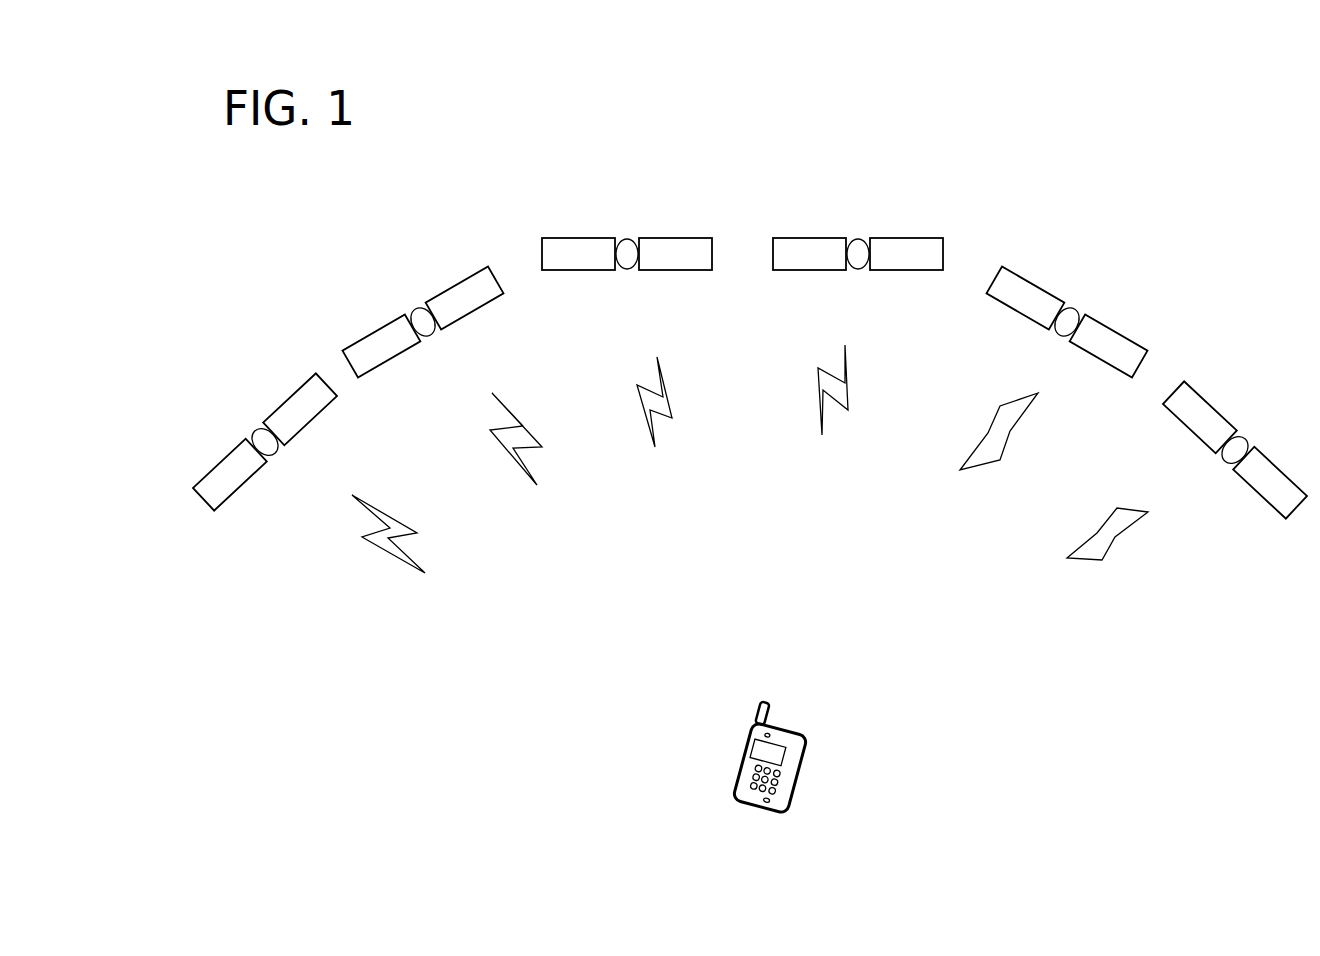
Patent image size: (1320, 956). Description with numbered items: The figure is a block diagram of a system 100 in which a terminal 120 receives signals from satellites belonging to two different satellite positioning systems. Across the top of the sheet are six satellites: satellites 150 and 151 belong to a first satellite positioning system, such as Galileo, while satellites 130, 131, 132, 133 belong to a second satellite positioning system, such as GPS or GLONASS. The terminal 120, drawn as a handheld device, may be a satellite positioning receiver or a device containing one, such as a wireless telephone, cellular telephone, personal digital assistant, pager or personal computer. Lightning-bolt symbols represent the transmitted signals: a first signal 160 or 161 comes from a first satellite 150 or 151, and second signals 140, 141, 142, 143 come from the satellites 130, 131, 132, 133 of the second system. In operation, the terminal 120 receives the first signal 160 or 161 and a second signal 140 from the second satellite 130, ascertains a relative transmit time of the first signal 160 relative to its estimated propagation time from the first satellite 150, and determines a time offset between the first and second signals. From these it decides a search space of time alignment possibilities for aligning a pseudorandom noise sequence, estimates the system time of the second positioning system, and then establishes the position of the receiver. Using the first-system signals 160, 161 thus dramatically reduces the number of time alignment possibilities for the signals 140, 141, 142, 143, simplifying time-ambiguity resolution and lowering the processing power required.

The system 100 is at (1229, 133).
The terminal 120 is at (742, 735).
The second satellite 130 is at (292, 398).
The satellite 131 is at (580, 238).
The satellite 132 is at (1050, 293).
The satellite 133 is at (1227, 420).
The first satellite 150 is at (375, 332).
The first satellite 151 is at (823, 238).
The second signal 140 is at (375, 508).
The signal 141 is at (665, 385).
The signal 142 is at (1028, 417).
The signal 143 is at (1118, 547).
The first signal 160 is at (523, 426).
The first signal 161 is at (848, 387).